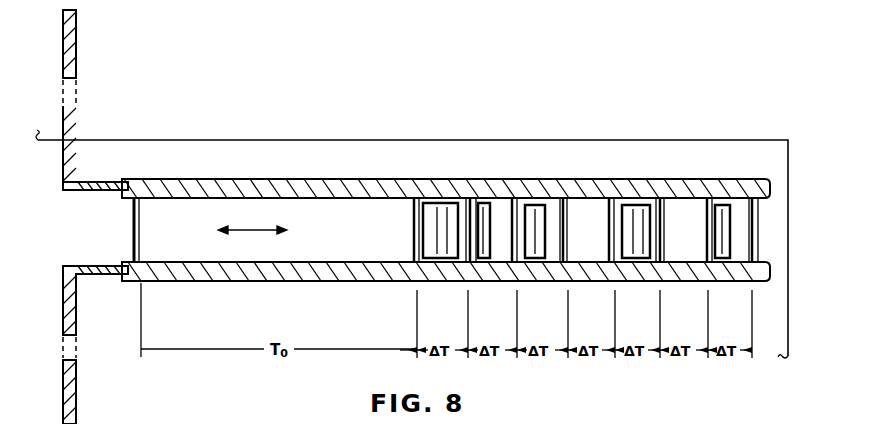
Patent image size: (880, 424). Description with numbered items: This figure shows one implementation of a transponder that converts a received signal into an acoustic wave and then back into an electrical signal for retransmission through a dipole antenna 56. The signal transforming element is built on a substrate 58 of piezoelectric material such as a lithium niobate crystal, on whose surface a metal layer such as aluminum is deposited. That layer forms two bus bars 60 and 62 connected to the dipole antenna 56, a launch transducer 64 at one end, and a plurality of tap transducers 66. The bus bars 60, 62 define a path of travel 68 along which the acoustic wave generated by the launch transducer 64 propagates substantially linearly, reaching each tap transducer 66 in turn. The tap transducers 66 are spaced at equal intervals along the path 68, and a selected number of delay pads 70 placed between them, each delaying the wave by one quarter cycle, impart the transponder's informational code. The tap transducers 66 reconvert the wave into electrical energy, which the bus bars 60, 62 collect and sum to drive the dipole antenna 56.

The dipole antenna 56 is at (65, 183).
The substrate 58 is at (677, 160).
The bus bar 60 is at (220, 190).
The bus bar 62 is at (223, 273).
The launch transducer 64 is at (136, 180).
The tap transducers 66 is at (465, 195).
The path of travel 68 is at (250, 230).
The delay pads 70 is at (482, 252).